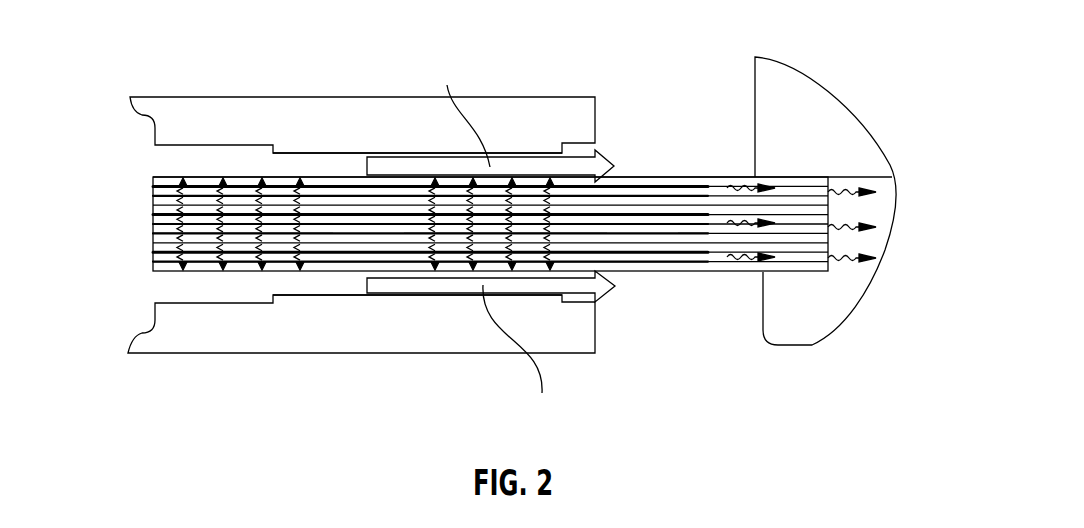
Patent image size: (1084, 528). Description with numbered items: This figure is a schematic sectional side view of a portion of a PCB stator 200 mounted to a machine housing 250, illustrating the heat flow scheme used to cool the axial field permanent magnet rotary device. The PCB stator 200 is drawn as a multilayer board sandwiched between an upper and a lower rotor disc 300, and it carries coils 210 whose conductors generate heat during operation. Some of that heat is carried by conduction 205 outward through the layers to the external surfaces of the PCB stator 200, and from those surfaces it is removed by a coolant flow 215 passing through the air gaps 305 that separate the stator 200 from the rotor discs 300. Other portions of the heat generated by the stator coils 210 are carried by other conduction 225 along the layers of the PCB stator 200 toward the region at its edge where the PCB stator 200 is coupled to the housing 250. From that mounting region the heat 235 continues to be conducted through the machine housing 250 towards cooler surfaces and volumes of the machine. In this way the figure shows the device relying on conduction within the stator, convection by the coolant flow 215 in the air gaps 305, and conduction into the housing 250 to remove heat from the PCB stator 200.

The PCB stator 200 is at (156, 272).
The conduction 205 is at (160, 211).
The coils 210 is at (154, 188).
The coolant flow 215 is at (595, 174).
The other conduction 225 is at (737, 183).
The heat 235 is at (850, 183).
The housing 250 is at (788, 88).
The rotor discs 300 is at (320, 108).
The air gaps 305 is at (295, 165).